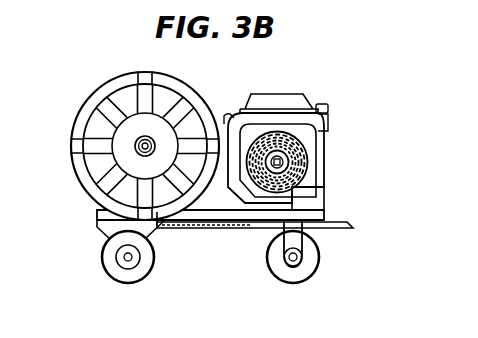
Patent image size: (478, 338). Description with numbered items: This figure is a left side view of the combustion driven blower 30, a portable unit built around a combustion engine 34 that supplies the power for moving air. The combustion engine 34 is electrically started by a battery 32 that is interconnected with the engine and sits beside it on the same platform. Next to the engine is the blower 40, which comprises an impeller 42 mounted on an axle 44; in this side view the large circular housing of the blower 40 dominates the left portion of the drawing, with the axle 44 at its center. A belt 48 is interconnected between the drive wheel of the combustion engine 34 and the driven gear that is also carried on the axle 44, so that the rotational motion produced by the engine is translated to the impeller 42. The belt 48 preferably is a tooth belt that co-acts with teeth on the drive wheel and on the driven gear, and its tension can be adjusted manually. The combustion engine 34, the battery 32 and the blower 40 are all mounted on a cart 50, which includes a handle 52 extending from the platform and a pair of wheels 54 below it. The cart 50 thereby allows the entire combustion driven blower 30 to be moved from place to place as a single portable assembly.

The combustion driven blower 30 is at (352, 113).
The battery 32 is at (326, 201).
The combustion engine 34 is at (327, 157).
The blower 40 is at (72, 154).
The impeller 42 is at (92, 173).
The axle 44 is at (136, 142).
The belt 48 is at (213, 200).
The cart 50 is at (236, 229).
The handle 52 is at (355, 226).
The wheels 54 is at (101, 262).